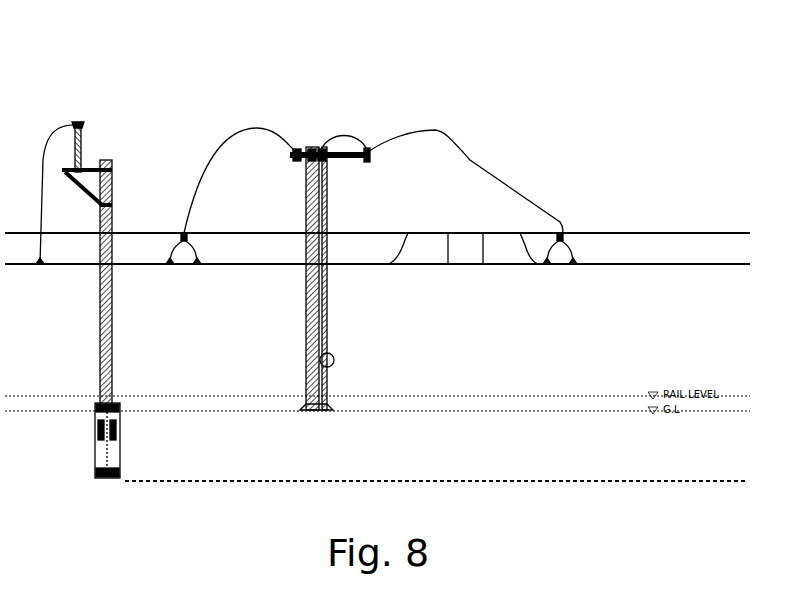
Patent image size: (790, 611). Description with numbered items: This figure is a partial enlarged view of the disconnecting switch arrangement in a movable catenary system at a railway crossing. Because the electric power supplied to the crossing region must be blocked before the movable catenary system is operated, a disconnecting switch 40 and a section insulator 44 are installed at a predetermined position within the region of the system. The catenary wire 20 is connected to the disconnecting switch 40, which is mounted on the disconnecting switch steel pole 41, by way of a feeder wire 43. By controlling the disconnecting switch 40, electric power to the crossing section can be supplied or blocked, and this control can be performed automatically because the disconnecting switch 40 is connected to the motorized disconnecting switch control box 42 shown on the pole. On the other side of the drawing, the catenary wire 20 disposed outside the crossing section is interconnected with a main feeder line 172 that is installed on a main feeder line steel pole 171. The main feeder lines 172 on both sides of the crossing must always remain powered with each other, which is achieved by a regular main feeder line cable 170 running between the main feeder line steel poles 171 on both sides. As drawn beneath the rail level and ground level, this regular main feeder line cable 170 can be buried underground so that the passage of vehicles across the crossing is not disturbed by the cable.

The catenary wire 20 is at (598, 264).
The disconnecting switch 40 is at (312, 148).
The disconnecting switch steel pole 41 is at (306, 310).
The motorized disconnecting switch control box 42 is at (337, 358).
The feeder wire 43 is at (232, 135).
The section insulator 44 is at (465, 264).
The regular main feeder line cable 170 is at (292, 481).
The main feeder line steel pole 171 is at (100, 318).
The main feeder line 172 is at (40, 135).